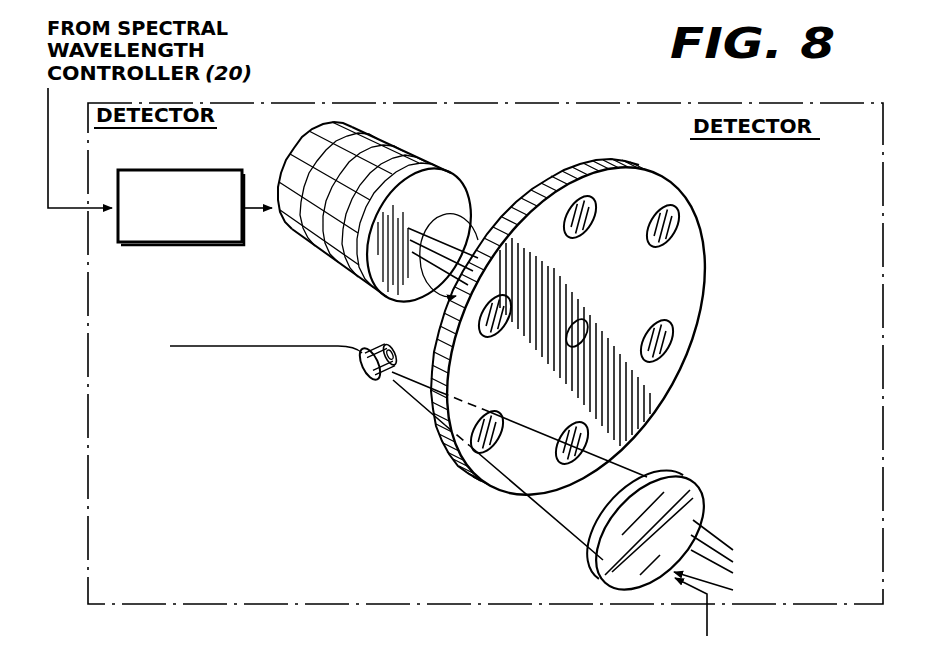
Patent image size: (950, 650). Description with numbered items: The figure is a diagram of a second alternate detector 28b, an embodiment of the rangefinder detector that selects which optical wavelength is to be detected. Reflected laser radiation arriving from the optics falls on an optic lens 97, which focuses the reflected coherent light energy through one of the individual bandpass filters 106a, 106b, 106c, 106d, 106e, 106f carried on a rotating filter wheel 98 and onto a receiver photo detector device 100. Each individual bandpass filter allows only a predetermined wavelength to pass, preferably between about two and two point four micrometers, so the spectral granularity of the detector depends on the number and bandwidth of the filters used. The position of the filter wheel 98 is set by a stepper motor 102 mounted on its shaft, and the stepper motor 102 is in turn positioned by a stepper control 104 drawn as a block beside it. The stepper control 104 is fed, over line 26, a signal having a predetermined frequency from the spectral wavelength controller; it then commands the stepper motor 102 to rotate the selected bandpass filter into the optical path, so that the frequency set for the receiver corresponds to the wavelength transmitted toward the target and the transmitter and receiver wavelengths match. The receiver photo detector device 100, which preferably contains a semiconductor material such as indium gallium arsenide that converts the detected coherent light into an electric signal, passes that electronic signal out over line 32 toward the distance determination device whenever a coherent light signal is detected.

The line 26 is at (48, 160).
The second alternate detector 28b is at (608, 103).
The line 32 is at (342, 348).
The optic lens 97 is at (690, 490).
The filter wheel 98 is at (703, 273).
The receiver photo detector device 100 is at (375, 390).
The stepper motor 102 is at (428, 165).
The stepper control 104 is at (160, 170).
The individual bandpass filter 106a is at (577, 240).
The individual bandpass filter 106b is at (497, 332).
The individual bandpass filter 106c is at (493, 412).
The individual bandpass filter 106d is at (573, 420).
The individual bandpass filter 106e is at (672, 335).
The individual bandpass filter 106f is at (677, 220).